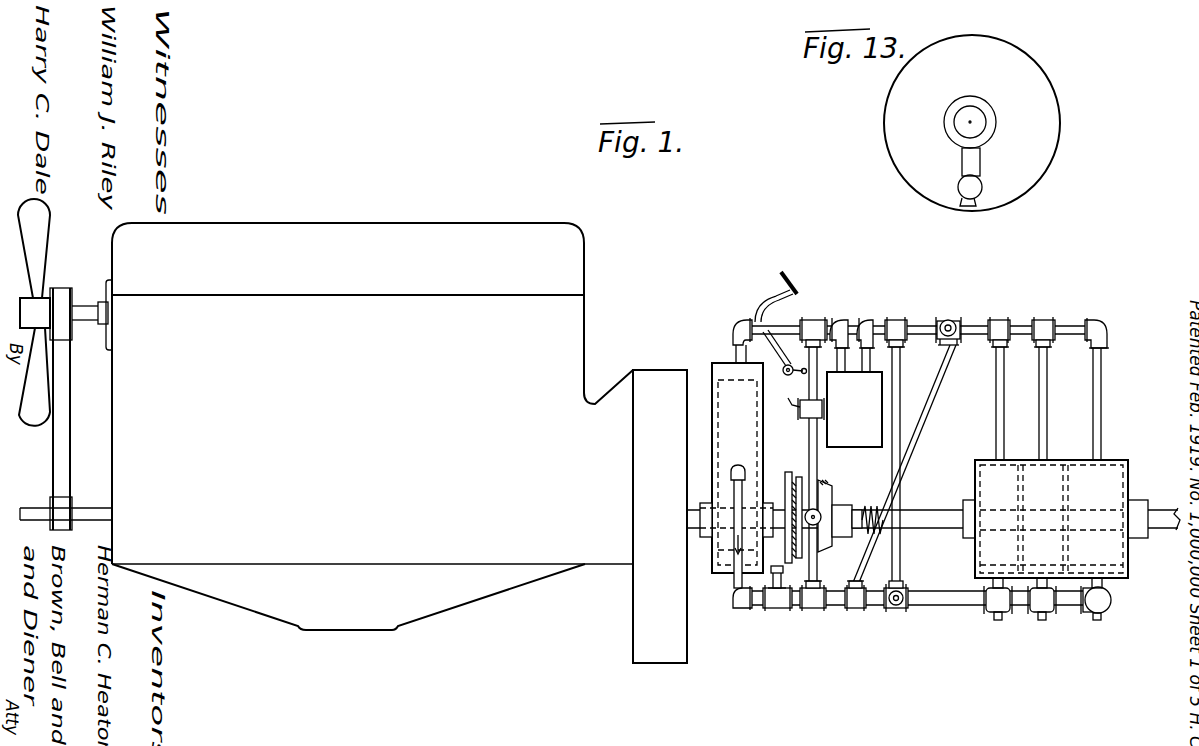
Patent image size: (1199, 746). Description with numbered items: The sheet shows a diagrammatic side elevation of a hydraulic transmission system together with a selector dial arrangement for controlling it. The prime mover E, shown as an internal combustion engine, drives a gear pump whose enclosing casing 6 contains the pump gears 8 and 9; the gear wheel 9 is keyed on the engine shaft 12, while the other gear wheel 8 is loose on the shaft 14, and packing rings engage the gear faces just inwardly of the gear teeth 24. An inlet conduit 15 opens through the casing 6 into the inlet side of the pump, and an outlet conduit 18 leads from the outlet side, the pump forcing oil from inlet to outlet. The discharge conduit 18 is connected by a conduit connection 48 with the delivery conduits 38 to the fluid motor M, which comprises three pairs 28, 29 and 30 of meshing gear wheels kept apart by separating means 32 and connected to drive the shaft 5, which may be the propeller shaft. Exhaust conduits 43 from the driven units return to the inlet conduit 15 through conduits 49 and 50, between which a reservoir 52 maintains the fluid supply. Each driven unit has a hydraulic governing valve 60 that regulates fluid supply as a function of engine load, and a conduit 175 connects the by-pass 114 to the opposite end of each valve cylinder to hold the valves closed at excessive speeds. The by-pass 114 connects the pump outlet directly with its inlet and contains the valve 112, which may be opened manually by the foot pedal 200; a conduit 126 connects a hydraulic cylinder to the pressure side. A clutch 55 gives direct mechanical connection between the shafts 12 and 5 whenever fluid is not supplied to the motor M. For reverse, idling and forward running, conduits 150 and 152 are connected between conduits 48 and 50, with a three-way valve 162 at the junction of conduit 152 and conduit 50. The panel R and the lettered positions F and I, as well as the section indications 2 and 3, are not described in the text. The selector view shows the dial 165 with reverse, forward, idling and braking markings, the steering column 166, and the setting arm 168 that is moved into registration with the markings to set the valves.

In FIG. 1, the prime mover E is at (283, 236).
In FIG. 1, the reservoir / panel R is at (700, 368).
In FIG. 13, the reservoir / panel R is at (964, 52).
In FIG. 1, the driven shaft 5 is at (1170, 530).
In FIG. 1, the pump gear wheel 8 is at (718, 398).
In FIG. 1, the shaft 14 is at (720, 422).
In FIG. 1, the pump casing 6 is at (706, 450).
In FIG. 1, the engine shaft 12 is at (740, 522).
In FIG. 1, the outlet conduit 18 is at (737, 500).
In FIG. 1, the gear teeth 24 is at (735, 470).
In FIG. 1, the pump gear wheel 9 is at (740, 548).
In FIG. 1, the conduit 49 is at (790, 328).
In FIG. 1, the inlet conduit 15 is at (740, 346).
In FIG. 1, the section line 2 is at (742, 308).
In FIG. 1, the foot pedal 200 is at (787, 292).
In FIG. 1, the conduit 150 is at (926, 303).
In FIG. 1, the conduit 50 is at (958, 325).
In FIG. 1, the three-way valve 162 is at (947, 337).
In FIG. 1, the exhaust conduits 43 is at (994, 388).
In FIG. 1, the gear unit 29 is at (1028, 470).
In FIG. 1, the gear unit 28 is at (986, 468).
In FIG. 1, the reservoir 52 is at (862, 440).
In FIG. 1, the conduit 175 is at (792, 412).
In FIG. 1, the by-pass 114 is at (806, 458).
In FIG. 1, the clutch 55 is at (826, 492).
In FIG. 1, the valve 112 is at (820, 514).
In FIG. 1, the conduit 152 is at (913, 418).
In FIG. 1, the fluid motor M is at (1120, 470).
In FIG. 1, the gear unit 30 is at (1122, 492).
In FIG. 1, the separating means 32 is at (1068, 492).
In FIG. 1, the section line 3 is at (1097, 402).
In FIG. 1, the conduit connection 48 is at (935, 603).
In FIG. 1, the conduit 126 is at (768, 580).
In FIG. 1, the hydraulic governing valve 60 is at (1040, 614).
In FIG. 1, the delivery conduit 38 is at (1102, 586).
In FIG. 13, the dial 165 is at (1028, 72).
In FIG. 13, the steering column 166 is at (977, 130).
In FIG. 13, the setting arm 168 is at (958, 182).
In FIG. 13, the forward position F is at (893, 124).
In FIG. 13, the idle position I is at (1042, 126).